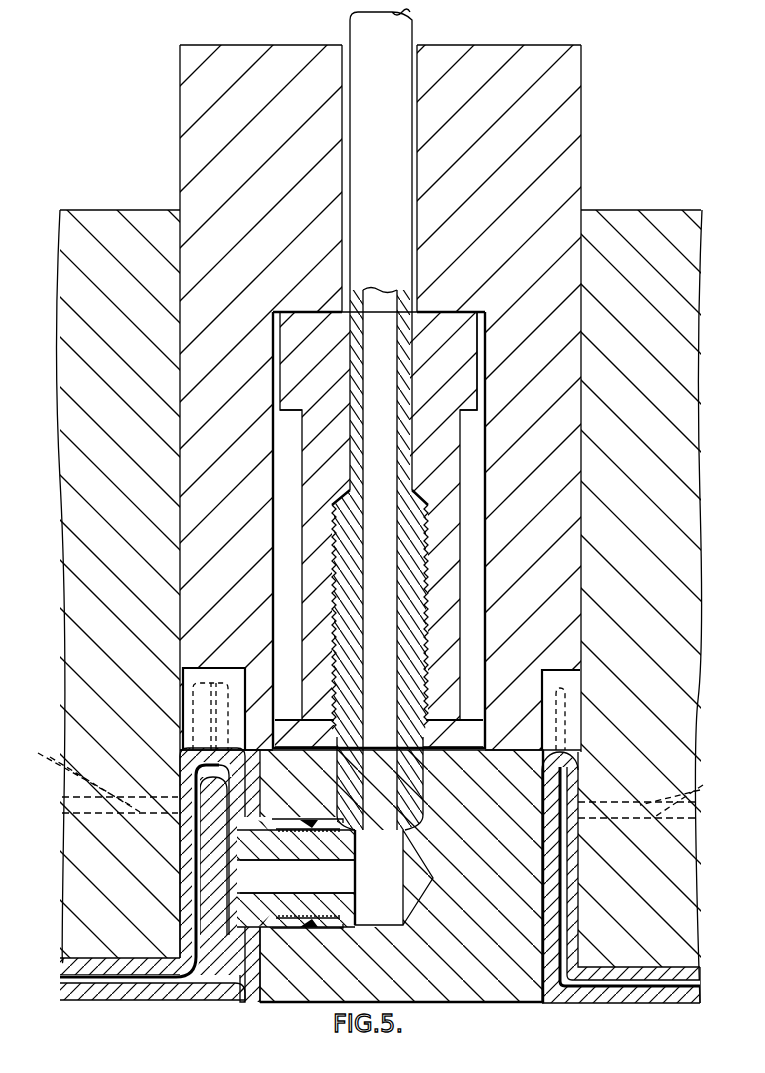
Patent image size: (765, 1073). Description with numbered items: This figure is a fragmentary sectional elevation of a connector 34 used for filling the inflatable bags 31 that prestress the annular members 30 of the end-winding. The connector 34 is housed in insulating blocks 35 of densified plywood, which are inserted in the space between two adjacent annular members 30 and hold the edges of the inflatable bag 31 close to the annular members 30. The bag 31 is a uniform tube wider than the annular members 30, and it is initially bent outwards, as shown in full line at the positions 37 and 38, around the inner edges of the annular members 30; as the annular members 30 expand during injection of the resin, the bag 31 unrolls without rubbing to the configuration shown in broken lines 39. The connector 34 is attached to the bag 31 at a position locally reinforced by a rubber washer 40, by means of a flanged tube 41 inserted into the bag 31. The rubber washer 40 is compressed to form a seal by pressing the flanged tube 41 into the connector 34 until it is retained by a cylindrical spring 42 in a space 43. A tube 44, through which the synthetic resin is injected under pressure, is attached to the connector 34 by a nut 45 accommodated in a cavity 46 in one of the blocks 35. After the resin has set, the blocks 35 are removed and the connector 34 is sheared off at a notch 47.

The annular member 30 is at (148, 209).
The inflatable bag 31 is at (125, 998).
The connector 34 is at (332, 741).
The insulating block 35 is at (277, 45).
The bent-out position of the inflatable bag 37 is at (228, 772).
The bent-out position of the inflatable bag 38 is at (573, 903).
The unrolled configuration of the inflatable bag 39 is at (374, 780).
The rubber washer 40 is at (244, 758).
The flanged tube 41 is at (236, 752).
The cylindrical spring 42 is at (292, 829).
The space 43 is at (272, 821).
The tube 44 is at (402, 35).
The nut 45 is at (470, 329).
The cavity 46 is at (475, 448).
The notch 47 is at (282, 913).